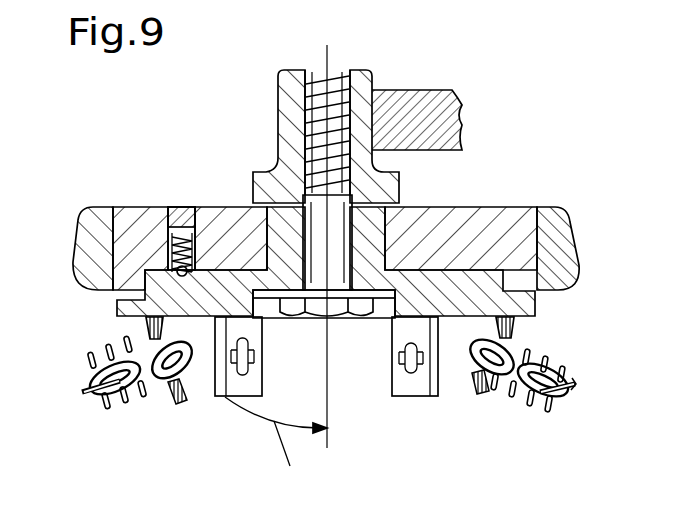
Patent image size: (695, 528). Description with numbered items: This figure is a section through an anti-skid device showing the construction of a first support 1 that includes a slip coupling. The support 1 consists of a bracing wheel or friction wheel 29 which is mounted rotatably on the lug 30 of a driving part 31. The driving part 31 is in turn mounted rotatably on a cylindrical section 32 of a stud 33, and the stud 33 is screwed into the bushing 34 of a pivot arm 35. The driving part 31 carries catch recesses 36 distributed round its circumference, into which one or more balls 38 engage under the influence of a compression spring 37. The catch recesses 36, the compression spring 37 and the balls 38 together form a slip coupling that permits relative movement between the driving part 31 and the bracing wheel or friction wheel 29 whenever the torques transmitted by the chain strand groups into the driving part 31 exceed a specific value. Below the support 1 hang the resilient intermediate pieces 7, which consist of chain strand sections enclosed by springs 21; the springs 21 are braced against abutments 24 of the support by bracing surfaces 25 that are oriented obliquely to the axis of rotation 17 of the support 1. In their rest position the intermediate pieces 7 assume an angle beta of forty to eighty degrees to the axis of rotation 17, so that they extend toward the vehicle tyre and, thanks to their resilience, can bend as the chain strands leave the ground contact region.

The support 1 is at (516, 168).
The intermediate pieces 7 is at (142, 418).
The axis of rotation 17 is at (328, 442).
The springs 21 is at (107, 417).
The abutments 24 is at (233, 396).
The bracing surfaces 25 is at (147, 326).
The bracing wheel or friction wheel 29 is at (525, 213).
The lug 30 is at (247, 207).
The driving part 31 is at (523, 308).
The cylindrical section 32 is at (340, 252).
The stud 33 is at (333, 137).
The bushing 34 is at (292, 117).
The pivot arm 35 is at (462, 105).
The catch recesses 36 is at (550, 242).
The compression spring 37 is at (160, 207).
The balls 38 is at (176, 270).